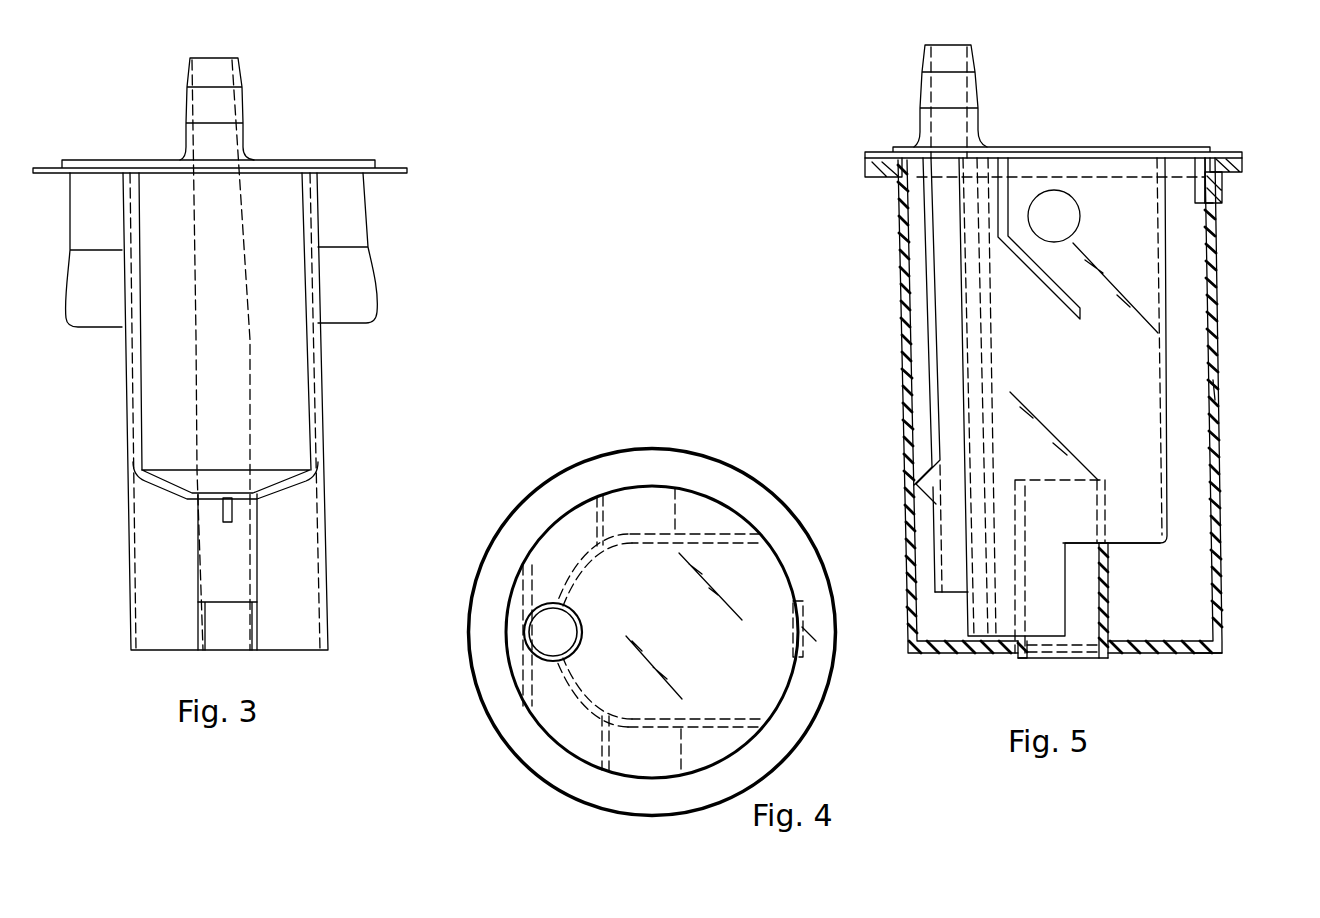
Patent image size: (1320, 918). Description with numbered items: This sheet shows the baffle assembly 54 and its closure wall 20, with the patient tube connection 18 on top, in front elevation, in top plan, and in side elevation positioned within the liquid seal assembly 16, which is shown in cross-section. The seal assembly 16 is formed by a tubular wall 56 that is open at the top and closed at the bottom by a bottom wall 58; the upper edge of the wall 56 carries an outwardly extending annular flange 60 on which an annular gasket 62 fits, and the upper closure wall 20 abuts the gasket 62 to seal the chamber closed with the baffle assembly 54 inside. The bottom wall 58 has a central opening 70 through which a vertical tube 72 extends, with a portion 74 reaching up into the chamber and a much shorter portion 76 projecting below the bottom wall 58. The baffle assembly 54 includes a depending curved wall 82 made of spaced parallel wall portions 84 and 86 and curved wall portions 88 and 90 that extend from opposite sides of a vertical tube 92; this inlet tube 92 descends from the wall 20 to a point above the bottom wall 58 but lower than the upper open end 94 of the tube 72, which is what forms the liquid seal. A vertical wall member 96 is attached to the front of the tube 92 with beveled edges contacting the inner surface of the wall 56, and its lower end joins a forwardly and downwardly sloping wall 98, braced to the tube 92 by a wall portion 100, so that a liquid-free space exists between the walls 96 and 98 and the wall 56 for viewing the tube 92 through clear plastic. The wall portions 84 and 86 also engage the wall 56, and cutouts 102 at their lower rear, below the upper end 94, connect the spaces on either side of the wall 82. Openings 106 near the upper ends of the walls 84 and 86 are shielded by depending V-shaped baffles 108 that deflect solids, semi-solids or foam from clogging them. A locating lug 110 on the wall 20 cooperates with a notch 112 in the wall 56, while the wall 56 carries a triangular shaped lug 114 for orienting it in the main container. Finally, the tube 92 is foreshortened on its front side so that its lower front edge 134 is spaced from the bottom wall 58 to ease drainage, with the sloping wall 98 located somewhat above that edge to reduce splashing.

In FIG. 5, the seal assembly 16 is at (898, 288).
In FIG. 5, the nozzle 18 is at (955, 102).
In FIG. 3, the upper closure wall 20 is at (318, 158).
In FIG. 5, the upper closure wall 20 is at (1063, 147).
In FIG. 3, the baffle assembly 54 is at (364, 383).
In FIG. 5, the baffle assembly 54 is at (1176, 507).
In FIG. 5, the tubular wall 56 is at (1215, 382).
In FIG. 5, the bottom wall 58 is at (1203, 650).
In FIG. 5, the annular flange 60 is at (1222, 178).
In FIG. 5, the annular gasket 62 is at (1241, 158).
In FIG. 5, the opening 70 is at (1112, 655).
In FIG. 5, the vertical tube 72 is at (1115, 587).
In FIG. 5, the portion 74 is at (1106, 622).
In FIG. 5, the portion 76 is at (1017, 656).
In FIG. 4, the depending curved wall 82 is at (630, 524).
In FIG. 4, the spaced parallel wall portion 84 is at (716, 533).
In FIG. 4, the spaced parallel wall portion 86 is at (761, 727).
In FIG. 4, the curved wall portion 88 is at (558, 555).
In FIG. 4, the curved wall portion 90 is at (600, 680).
In FIG. 3, the vertical tube 92 is at (242, 547).
In FIG. 4, the vertical tube 92 is at (553, 661).
In FIG. 5, the vertical tube 92 is at (952, 550).
In FIG. 5, the upper open end 94 is at (1047, 478).
In FIG. 3, the vertical wall member 96 is at (287, 340).
In FIG. 5, the vertical wall member 96 is at (922, 240).
In FIG. 3, the sloping wall 98 is at (268, 477).
In FIG. 4, the sloping wall 98 is at (535, 660).
In FIG. 5, the sloping wall 98 is at (920, 465).
In FIG. 3, the wall portion 100 is at (223, 512).
In FIG. 5, the wall portion 100 is at (927, 492).
In FIG. 5, the cutout 102 is at (1150, 544).
In FIG. 5, the opening 106 is at (1060, 203).
In FIG. 3, the V-shaped baffle 108 is at (350, 276).
In FIG. 5, the V-shaped baffle 108 is at (1053, 293).
In FIG. 4, the locating lug 110 is at (818, 641).
In FIG. 5, the locating lug 110 is at (1202, 182).
In FIG. 5, the notch 112 is at (1199, 192).
In FIG. 5, the triangular shaped lug 114 is at (1222, 205).
In FIG. 3, the lower front edge 134 is at (226, 603).
In FIG. 5, the lower front edge 134 is at (953, 594).